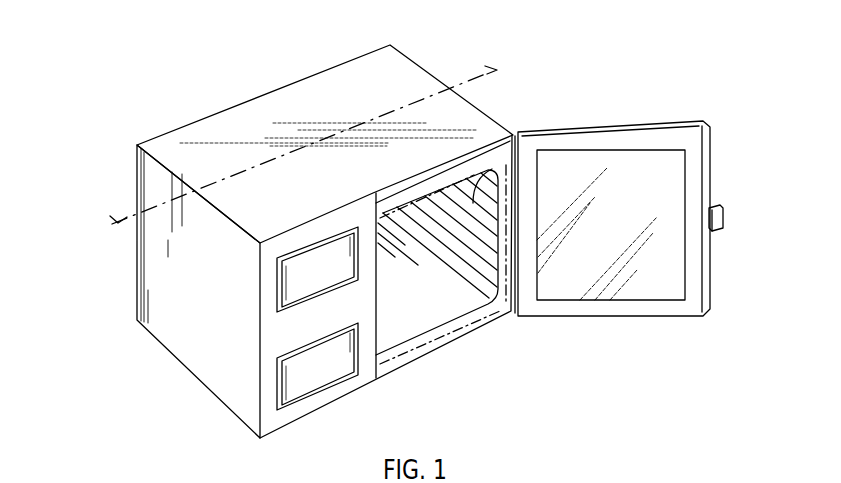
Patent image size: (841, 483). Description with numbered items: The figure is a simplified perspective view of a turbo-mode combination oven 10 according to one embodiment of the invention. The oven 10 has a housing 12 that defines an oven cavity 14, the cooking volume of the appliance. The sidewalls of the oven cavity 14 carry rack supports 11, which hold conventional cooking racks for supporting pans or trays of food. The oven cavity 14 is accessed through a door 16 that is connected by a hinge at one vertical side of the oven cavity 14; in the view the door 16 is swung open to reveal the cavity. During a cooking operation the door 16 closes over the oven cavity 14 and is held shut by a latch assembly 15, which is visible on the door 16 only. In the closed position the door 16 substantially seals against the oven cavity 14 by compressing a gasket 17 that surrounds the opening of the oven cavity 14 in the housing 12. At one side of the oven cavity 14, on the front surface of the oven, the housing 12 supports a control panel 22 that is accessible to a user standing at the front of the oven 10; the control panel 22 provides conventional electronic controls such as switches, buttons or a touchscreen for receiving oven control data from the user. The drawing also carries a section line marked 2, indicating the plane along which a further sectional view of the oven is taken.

The turbo-mode combination oven 10 is at (152, 78).
The rack supports 11 is at (478, 172).
The housing 12 is at (336, 77).
The oven cavity 14 is at (455, 304).
The latch assembly 15 is at (724, 218).
The door 16 is at (611, 318).
The gasket 17 is at (413, 346).
The control panel 22 is at (332, 388).
The section line 2- 2 is at (92, 201).